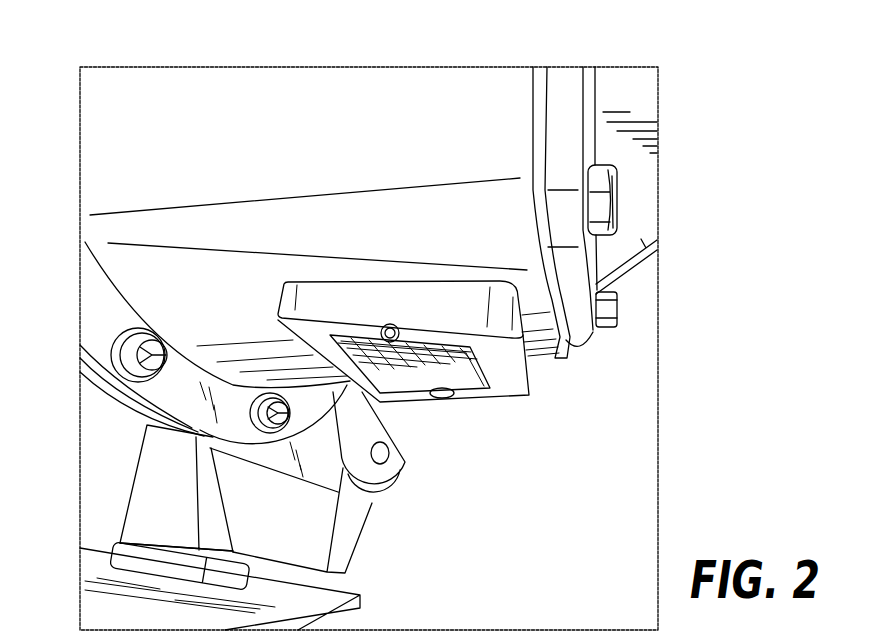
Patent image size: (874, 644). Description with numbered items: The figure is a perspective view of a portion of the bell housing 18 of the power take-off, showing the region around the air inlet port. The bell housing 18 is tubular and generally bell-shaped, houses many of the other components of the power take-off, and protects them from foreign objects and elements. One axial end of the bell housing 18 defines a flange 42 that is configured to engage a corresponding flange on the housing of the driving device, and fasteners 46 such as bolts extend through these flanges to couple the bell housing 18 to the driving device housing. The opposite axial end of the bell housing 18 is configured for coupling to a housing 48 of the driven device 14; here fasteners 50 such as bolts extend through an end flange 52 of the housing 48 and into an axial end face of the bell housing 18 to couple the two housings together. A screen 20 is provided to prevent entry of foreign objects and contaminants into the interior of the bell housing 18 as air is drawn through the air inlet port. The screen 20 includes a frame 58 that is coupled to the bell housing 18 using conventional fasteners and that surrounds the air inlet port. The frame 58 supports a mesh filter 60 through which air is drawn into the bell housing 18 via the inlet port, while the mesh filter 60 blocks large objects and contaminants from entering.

The driven device 14 is at (632, 88).
The bell housing 18 is at (350, 107).
The screen 20 is at (550, 385).
The flange 42 is at (187, 413).
The fasteners 46 is at (112, 337).
The housing 48 is at (647, 247).
The fasteners 50 is at (605, 312).
The end flange 52 is at (580, 328).
The frame 58 is at (508, 388).
The mesh filter 60 is at (403, 343).